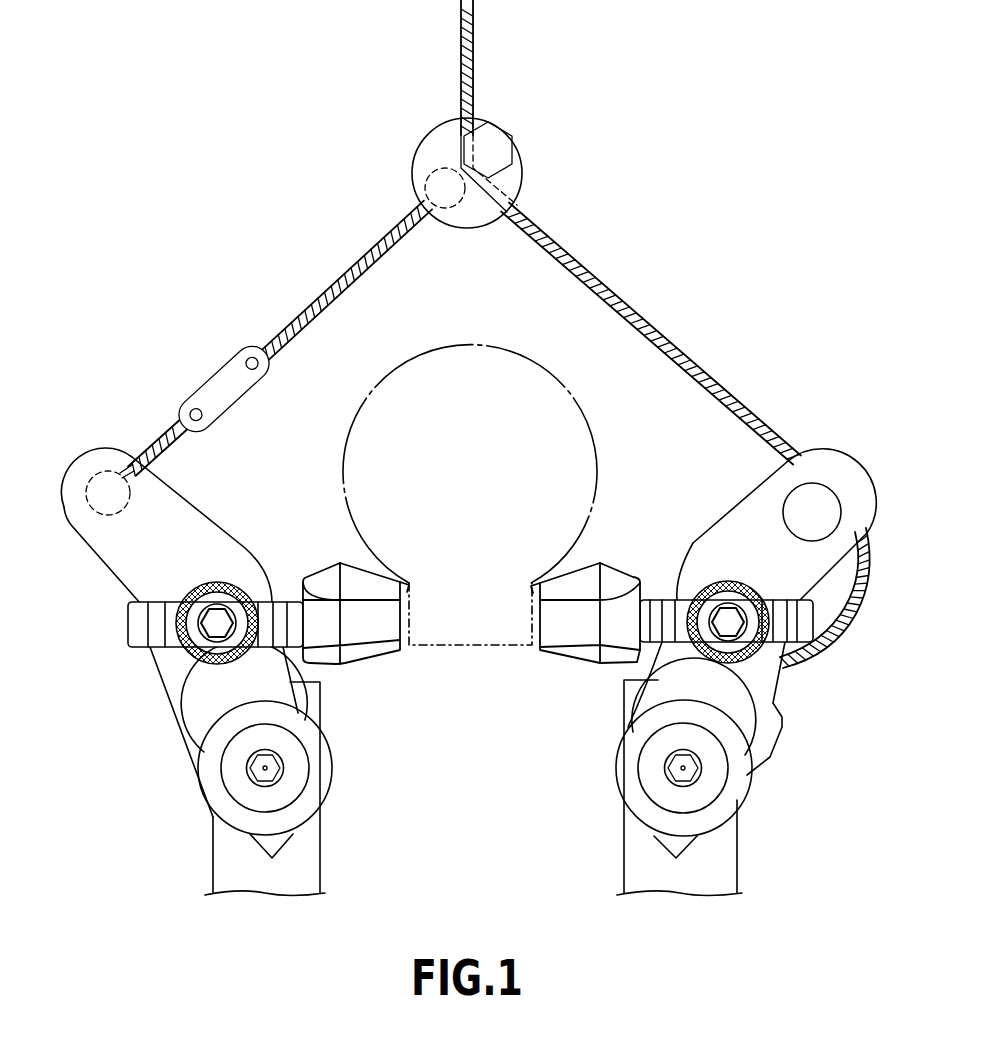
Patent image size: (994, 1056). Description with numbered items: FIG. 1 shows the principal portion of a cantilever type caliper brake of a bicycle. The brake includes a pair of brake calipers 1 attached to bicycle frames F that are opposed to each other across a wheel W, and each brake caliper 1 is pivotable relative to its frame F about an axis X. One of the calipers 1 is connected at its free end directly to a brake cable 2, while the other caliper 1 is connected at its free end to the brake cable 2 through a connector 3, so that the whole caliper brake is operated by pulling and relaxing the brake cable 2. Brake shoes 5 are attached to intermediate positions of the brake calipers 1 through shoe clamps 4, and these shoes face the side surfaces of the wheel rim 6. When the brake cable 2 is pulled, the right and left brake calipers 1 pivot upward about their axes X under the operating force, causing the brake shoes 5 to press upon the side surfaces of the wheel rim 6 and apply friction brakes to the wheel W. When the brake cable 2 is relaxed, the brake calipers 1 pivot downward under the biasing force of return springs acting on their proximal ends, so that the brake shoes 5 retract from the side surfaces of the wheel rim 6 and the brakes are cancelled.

The brake caliper 1 is at (117, 453).
The brake cable 2 is at (472, 80).
The connector 3 is at (313, 300).
The shoe clamp 4 is at (210, 650).
The brake shoe 5 is at (380, 650).
The wheel rim 6 is at (478, 647).
The wheel W is at (473, 345).
The bicycle frame F is at (320, 862).
The axis X is at (263, 770).